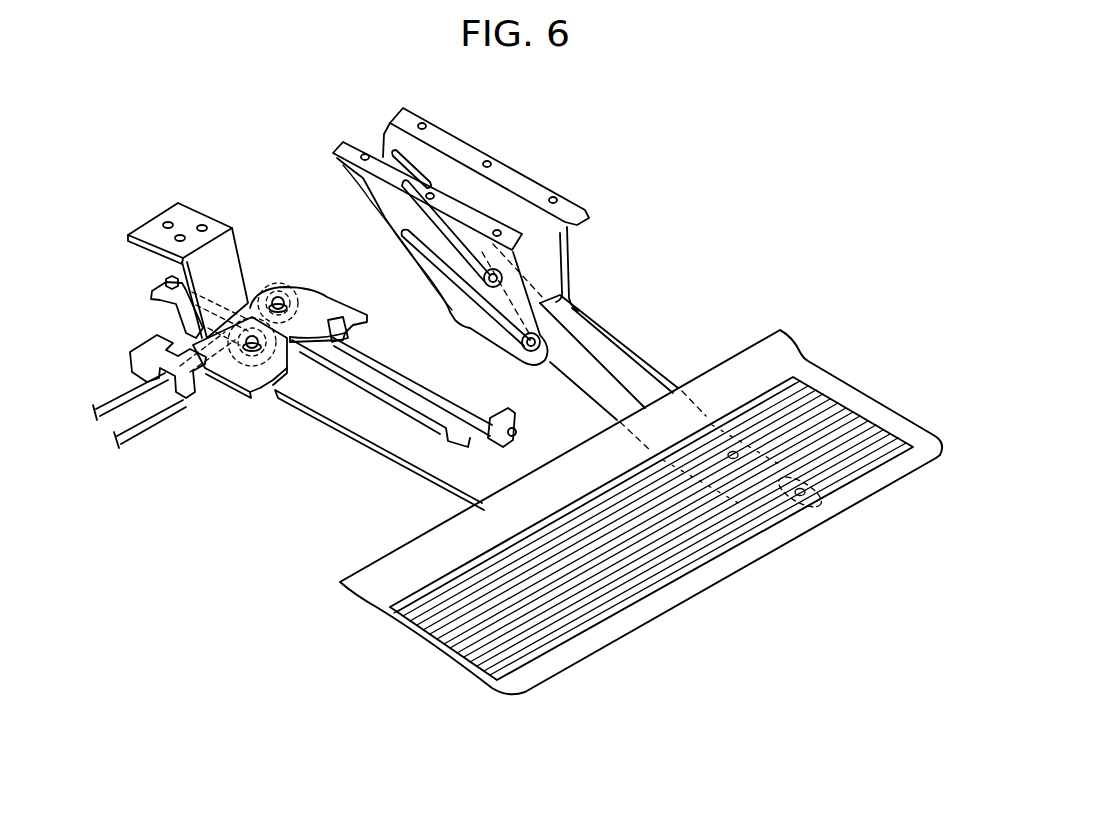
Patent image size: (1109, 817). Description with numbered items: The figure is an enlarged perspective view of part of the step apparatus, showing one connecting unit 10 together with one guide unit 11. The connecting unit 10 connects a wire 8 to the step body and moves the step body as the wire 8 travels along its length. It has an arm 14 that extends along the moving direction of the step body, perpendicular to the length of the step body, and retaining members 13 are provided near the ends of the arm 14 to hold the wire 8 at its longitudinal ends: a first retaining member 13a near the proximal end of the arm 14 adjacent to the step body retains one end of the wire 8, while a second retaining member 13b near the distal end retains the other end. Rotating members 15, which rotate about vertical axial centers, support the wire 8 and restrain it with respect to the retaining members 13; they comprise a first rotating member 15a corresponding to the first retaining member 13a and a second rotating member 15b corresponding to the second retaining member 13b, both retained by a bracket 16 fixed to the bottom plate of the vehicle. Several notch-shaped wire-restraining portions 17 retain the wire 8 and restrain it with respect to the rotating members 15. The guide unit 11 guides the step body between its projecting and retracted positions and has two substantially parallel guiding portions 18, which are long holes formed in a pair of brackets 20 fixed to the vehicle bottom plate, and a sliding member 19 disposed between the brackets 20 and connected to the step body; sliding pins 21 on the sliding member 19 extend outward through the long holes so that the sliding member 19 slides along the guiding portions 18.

The wire 8 is at (447, 396).
The connecting unit 10 is at (330, 473).
The guide unit 11 is at (361, 132).
The retaining member 13 is at (284, 347).
The first retaining member 13a is at (427, 450).
The second retaining member 13b is at (153, 290).
The arm 14 is at (382, 427).
The rotating member 15 is at (280, 387).
The first rotating member 15a is at (286, 392).
The second rotating member 15b is at (253, 395).
The bracket 16 is at (197, 213).
The wire-restraining portion 17 is at (350, 338).
The guiding portion 18 is at (430, 258).
The sliding member 19 is at (612, 335).
The bracket 20 is at (512, 176).
The sliding pin 21 is at (513, 347).